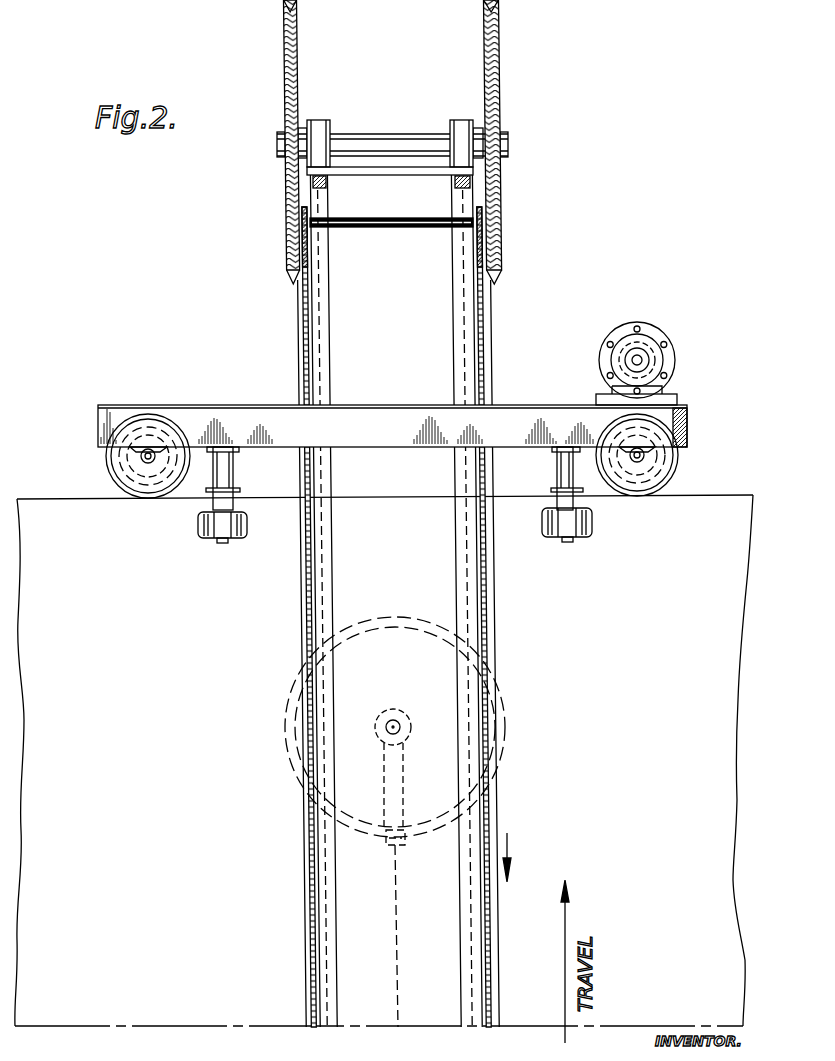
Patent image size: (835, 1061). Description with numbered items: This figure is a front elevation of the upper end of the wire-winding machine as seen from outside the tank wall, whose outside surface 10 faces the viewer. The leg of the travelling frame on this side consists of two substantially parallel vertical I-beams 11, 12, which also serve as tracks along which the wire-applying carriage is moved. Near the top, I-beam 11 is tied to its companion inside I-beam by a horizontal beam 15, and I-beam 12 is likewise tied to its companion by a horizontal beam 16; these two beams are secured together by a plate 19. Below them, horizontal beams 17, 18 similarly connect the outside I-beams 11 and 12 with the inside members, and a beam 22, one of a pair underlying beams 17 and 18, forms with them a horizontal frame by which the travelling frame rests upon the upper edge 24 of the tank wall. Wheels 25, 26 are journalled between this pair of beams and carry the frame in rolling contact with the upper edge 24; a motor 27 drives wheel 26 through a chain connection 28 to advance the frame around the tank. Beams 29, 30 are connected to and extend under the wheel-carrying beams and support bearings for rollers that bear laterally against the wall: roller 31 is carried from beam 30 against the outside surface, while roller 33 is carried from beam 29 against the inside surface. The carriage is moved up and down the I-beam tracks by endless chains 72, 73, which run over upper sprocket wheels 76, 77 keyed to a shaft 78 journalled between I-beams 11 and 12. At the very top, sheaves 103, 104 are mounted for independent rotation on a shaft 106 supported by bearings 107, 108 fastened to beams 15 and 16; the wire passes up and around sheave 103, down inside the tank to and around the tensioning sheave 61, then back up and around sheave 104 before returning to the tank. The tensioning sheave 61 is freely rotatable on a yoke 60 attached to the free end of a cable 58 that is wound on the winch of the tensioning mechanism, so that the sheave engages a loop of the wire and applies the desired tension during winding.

The outside surface 10 is at (683, 810).
The upper edge 24 is at (713, 497).
The beam 22 is at (401, 420).
The chain connection 28 is at (688, 410).
The wheel 26 is at (110, 470).
The wheel 25 is at (679, 467).
The motor 27 is at (672, 391).
The beam 29 is at (556, 471).
The beam 30 is at (234, 471).
The roller 31 is at (236, 542).
The roller 33 is at (584, 542).
The I-beam 11 is at (333, 577).
The I-beam 12 is at (456, 578).
The horizontal beam 17 is at (334, 378).
The horizontal beam 18 is at (457, 378).
The endless chain 72 is at (301, 624).
The endless chain 73 is at (495, 623).
The upper sprocket wheel 76 is at (299, 212).
The upper sprocket wheel 77 is at (487, 216).
The horizontal beam 15 is at (324, 194).
The horizontal beam 16 is at (461, 186).
The plate 19 is at (394, 166).
The shaft 78 is at (368, 227).
The sheave 103 is at (286, 96).
The sheave 104 is at (500, 66).
The shaft 106 is at (356, 140).
The bearing 107 is at (318, 120).
The bearing 108 is at (452, 124).
The tensioning sheave 61 is at (288, 713).
The yoke 60 is at (391, 847).
The cable 58 is at (398, 932).